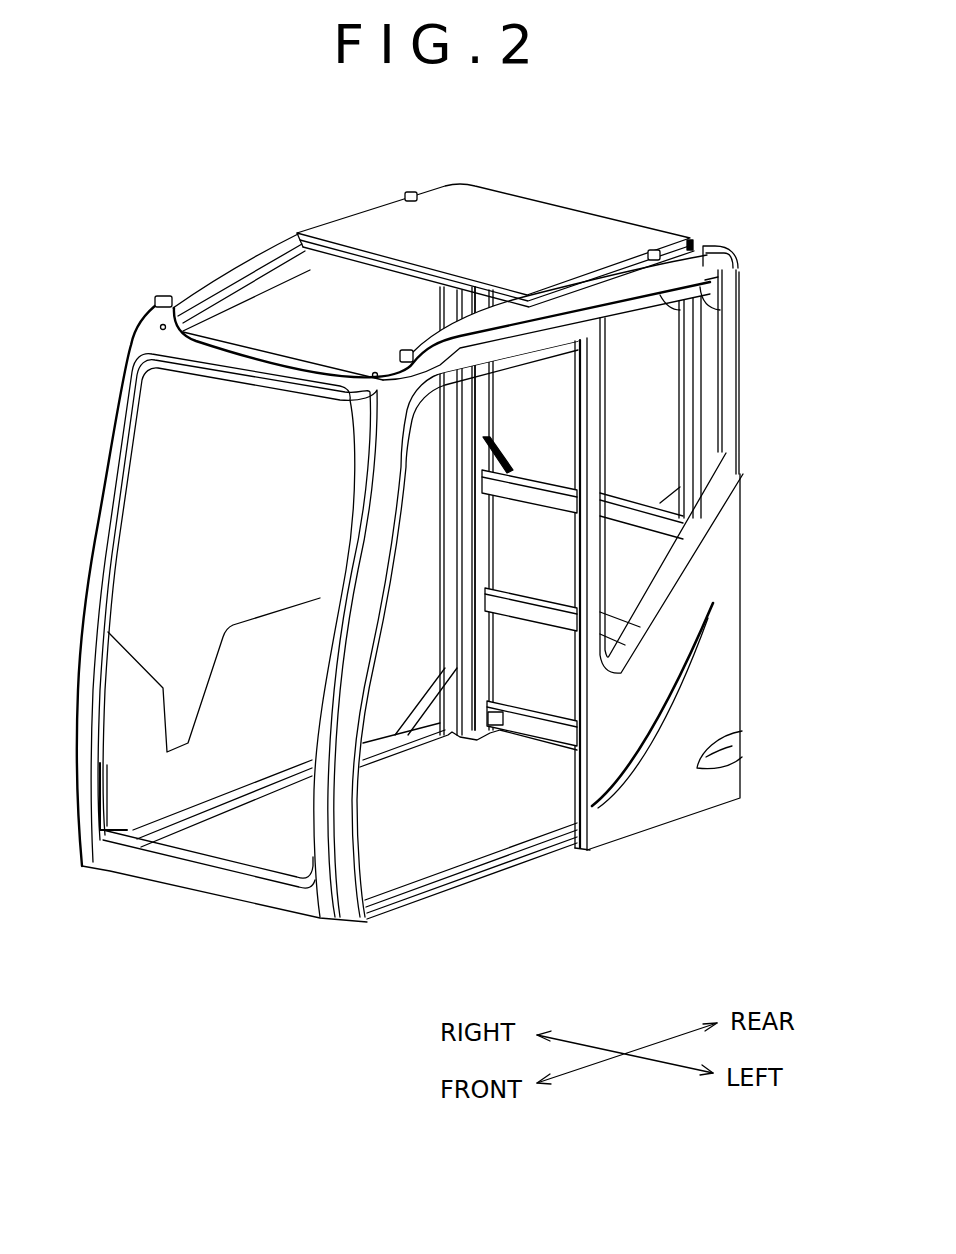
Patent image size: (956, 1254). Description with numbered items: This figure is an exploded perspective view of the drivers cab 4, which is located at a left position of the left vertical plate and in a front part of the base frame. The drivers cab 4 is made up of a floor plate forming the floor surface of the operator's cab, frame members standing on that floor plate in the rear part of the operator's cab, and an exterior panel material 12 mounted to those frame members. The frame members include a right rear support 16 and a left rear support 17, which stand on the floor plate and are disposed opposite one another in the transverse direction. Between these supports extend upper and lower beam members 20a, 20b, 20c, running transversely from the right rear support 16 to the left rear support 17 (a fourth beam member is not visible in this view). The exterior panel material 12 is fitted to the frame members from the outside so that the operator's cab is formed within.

The drivers cab 4 is at (193, 195).
The exterior panel material 12 is at (507, 207).
The right rear support 16 is at (480, 378).
The left rear support 17 is at (713, 413).
The beam member 20a is at (527, 492).
The beam member 20b is at (527, 610).
The beam member 20c is at (540, 730).